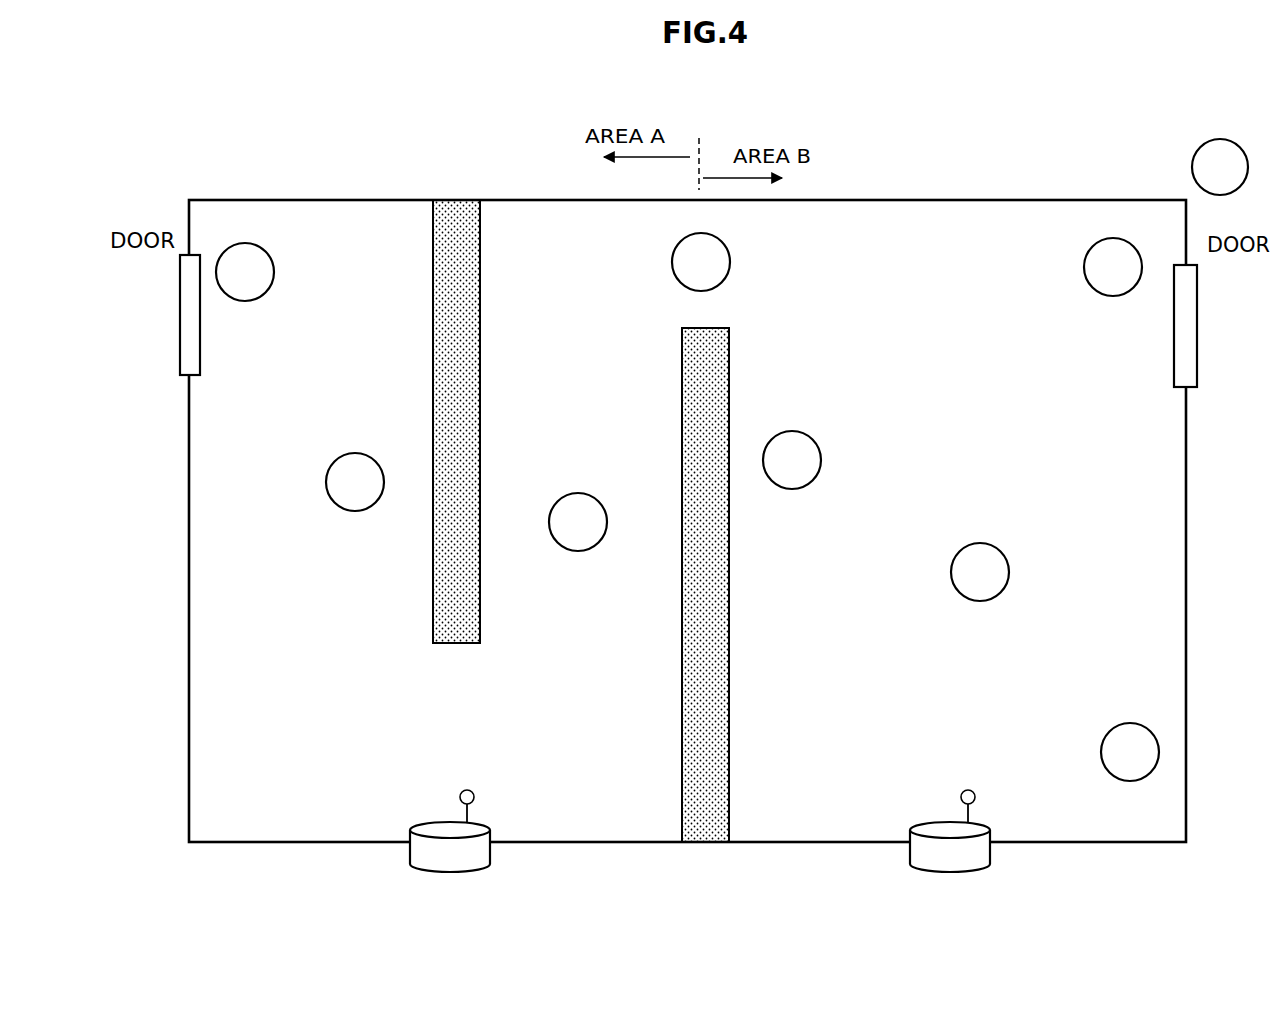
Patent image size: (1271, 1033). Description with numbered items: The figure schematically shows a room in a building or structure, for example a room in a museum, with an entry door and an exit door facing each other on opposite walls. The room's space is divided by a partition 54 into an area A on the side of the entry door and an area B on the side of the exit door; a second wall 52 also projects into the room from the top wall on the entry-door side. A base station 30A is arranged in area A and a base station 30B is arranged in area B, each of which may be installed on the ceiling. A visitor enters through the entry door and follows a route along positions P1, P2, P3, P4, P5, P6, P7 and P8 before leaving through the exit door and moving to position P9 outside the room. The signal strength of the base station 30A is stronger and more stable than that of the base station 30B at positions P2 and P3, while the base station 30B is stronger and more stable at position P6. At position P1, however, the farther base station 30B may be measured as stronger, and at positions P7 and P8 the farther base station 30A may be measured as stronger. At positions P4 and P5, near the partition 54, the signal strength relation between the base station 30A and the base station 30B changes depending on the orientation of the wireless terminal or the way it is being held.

The partition wall 52 is at (455, 200).
The partition 54 is at (682, 428).
The base station 30A is at (437, 823).
The base station 30B is at (937, 823).
The position P1 is at (245, 272).
The position P2 is at (355, 482).
The position P3 is at (578, 522).
The position P4 is at (701, 262).
The position P5 is at (792, 460).
The position P6 is at (980, 572).
The position P7 is at (1130, 752).
The position P8 is at (1113, 267).
The position P9 is at (1220, 167).